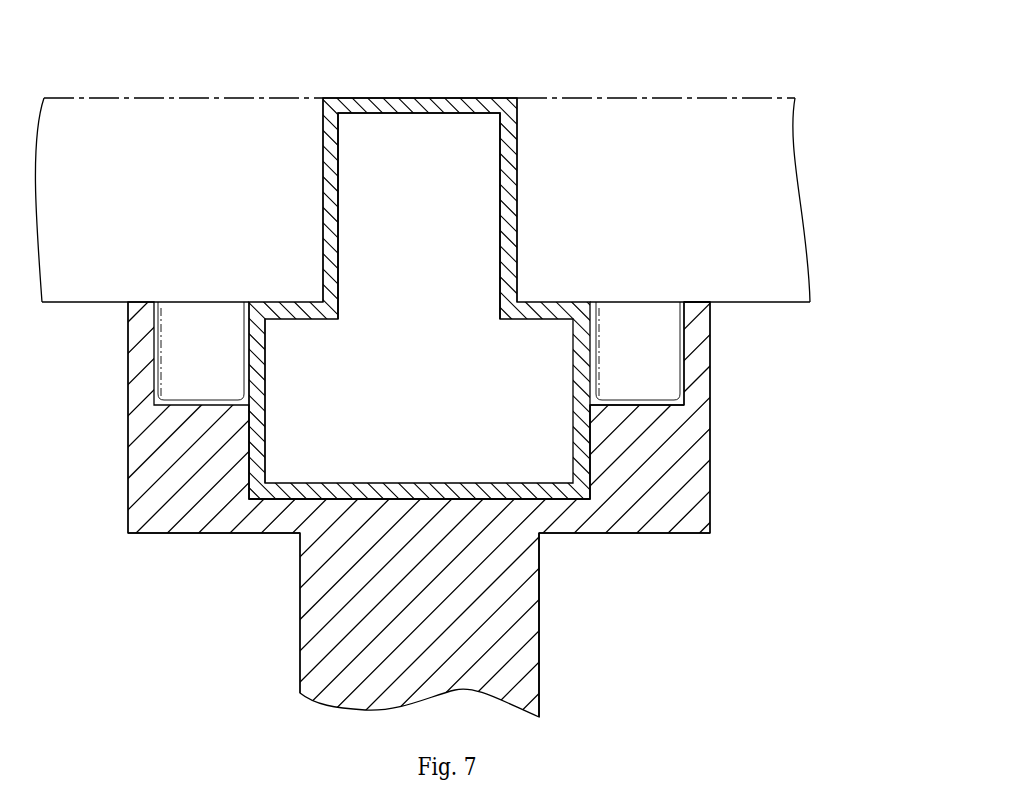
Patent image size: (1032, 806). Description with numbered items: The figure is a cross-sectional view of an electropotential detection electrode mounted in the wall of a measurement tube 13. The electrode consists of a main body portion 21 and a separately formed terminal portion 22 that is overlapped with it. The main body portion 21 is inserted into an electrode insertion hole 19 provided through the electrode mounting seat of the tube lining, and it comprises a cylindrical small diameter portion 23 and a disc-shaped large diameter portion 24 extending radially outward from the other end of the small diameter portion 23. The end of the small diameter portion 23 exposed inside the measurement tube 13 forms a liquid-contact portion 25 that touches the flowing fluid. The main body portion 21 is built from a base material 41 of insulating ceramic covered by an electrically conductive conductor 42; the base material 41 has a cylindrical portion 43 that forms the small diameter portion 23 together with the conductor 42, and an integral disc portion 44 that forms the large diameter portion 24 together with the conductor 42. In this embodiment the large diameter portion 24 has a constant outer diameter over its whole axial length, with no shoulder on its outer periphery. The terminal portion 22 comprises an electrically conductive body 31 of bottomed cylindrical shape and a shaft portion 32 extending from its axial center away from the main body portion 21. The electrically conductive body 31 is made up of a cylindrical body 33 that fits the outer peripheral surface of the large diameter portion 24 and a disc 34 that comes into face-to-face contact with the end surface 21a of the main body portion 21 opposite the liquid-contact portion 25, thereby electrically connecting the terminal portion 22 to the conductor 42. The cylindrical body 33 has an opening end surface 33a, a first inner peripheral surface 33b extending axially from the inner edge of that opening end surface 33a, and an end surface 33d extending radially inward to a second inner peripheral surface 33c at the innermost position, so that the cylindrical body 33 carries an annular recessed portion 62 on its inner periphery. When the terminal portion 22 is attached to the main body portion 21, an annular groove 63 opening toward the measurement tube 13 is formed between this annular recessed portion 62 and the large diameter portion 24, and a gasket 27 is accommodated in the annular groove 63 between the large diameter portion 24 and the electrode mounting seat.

The measurement tube 13 is at (170, 86).
The electrode insertion hole 19 is at (338, 156).
The main body portion 21 is at (401, 87).
The end surface 21a is at (277, 502).
The terminal portion 22 is at (553, 678).
The small diameter portion 23 is at (322, 128).
The large diameter portion 24 is at (249, 440).
The liquid-contact portion 25 is at (470, 97).
The gasket 27 is at (685, 301).
The electrically conductive body 31 is at (862, 470).
The shaft portion 32 is at (541, 632).
The cylindrical body 33 is at (680, 472).
The opening end surface 33a is at (702, 301).
The first inner peripheral surface 33b is at (684, 330).
The second inner peripheral surface 33c is at (580, 450).
The end surface 33d is at (647, 402).
The disc 34 is at (556, 524).
The base material 41 is at (515, 152).
The conductor 42 is at (518, 183).
The cylindrical portion 43 is at (353, 183).
The disc portion 44 is at (263, 460).
The annular recessed portion 62 is at (617, 400).
The annular groove 63 is at (209, 379).